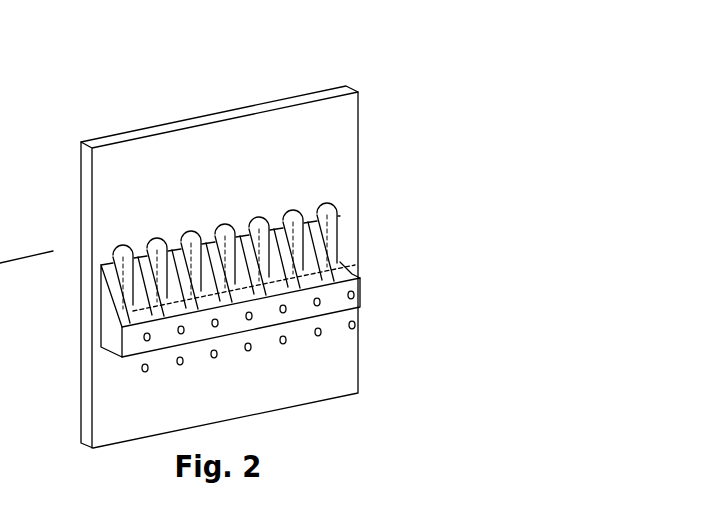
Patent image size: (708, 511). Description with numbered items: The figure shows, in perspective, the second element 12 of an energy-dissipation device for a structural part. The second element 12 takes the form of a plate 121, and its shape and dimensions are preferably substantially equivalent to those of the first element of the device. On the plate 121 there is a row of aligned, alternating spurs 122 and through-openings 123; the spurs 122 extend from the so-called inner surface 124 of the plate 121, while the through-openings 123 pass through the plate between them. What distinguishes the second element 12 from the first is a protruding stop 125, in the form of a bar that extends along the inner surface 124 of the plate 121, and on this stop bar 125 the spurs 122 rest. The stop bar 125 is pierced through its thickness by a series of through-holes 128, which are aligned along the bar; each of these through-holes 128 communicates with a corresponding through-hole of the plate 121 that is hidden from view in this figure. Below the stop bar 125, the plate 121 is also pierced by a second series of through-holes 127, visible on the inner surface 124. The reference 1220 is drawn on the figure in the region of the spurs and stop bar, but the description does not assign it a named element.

The second element 12 is at (204, 250).
The plate 121 is at (358, 132).
The spurs 122 is at (204, 220).
The top surface of support block 1220 is at (243, 238).
The through-openings 123 is at (121, 258).
The inner surface 124 is at (308, 363).
The stop 125 is at (349, 272).
The second series of through-holes 127 is at (146, 373).
The through-holes 128 is at (355, 295).